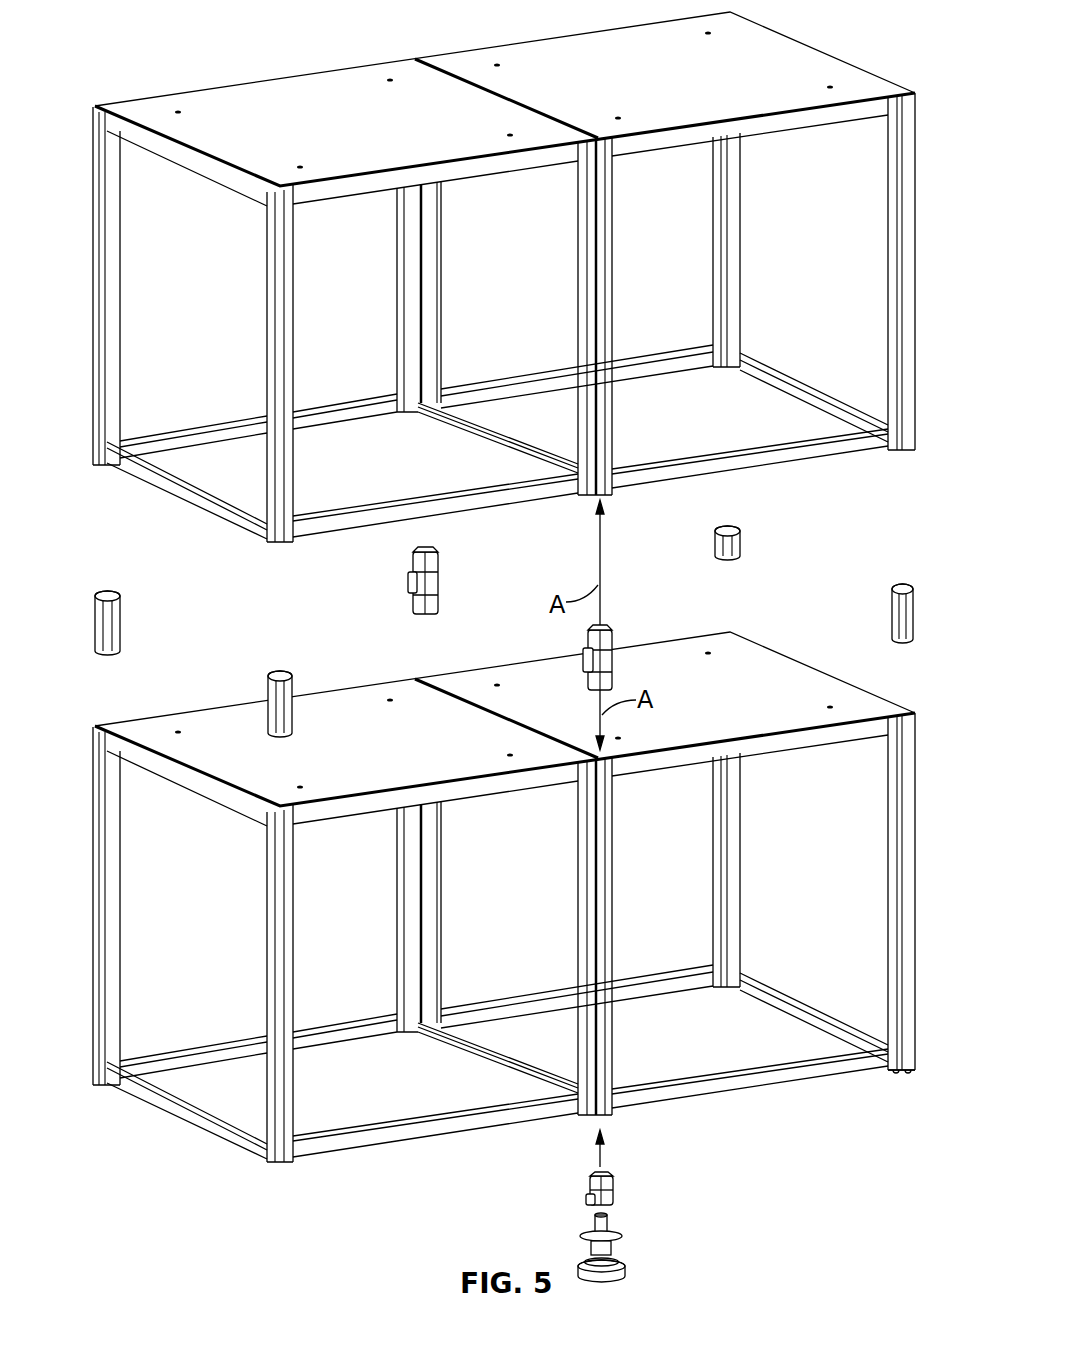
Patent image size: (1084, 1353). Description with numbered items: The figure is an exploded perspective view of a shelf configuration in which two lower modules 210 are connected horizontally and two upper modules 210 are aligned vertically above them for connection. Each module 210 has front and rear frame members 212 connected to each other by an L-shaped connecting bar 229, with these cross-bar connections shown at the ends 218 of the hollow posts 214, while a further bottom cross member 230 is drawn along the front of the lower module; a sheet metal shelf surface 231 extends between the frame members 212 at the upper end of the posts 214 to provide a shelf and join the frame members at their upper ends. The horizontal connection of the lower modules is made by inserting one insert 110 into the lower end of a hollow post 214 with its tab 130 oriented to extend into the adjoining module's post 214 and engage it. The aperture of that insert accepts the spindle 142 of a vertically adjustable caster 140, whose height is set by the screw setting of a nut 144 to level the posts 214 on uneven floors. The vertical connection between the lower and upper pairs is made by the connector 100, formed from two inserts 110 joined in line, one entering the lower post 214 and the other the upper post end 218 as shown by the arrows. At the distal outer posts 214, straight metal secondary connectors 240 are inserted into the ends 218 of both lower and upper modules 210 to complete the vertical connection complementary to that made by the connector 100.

The connector 100 is at (448, 593).
The insert 110 is at (613, 640).
The tab 130 is at (588, 1198).
The caster 140 is at (615, 1245).
The spindle 142 is at (594, 1222).
The nut 144 is at (588, 1250).
The module 210 is at (533, 961).
The frame member 212 is at (84, 296).
The hollow post 214 is at (902, 922).
The end 218 is at (910, 1072).
The L-shaped connecting bar 229 is at (795, 1010).
The bottom front rail 230 is at (740, 1085).
The shelf surface 231 is at (700, 87).
The secondary connector 240 is at (122, 621).